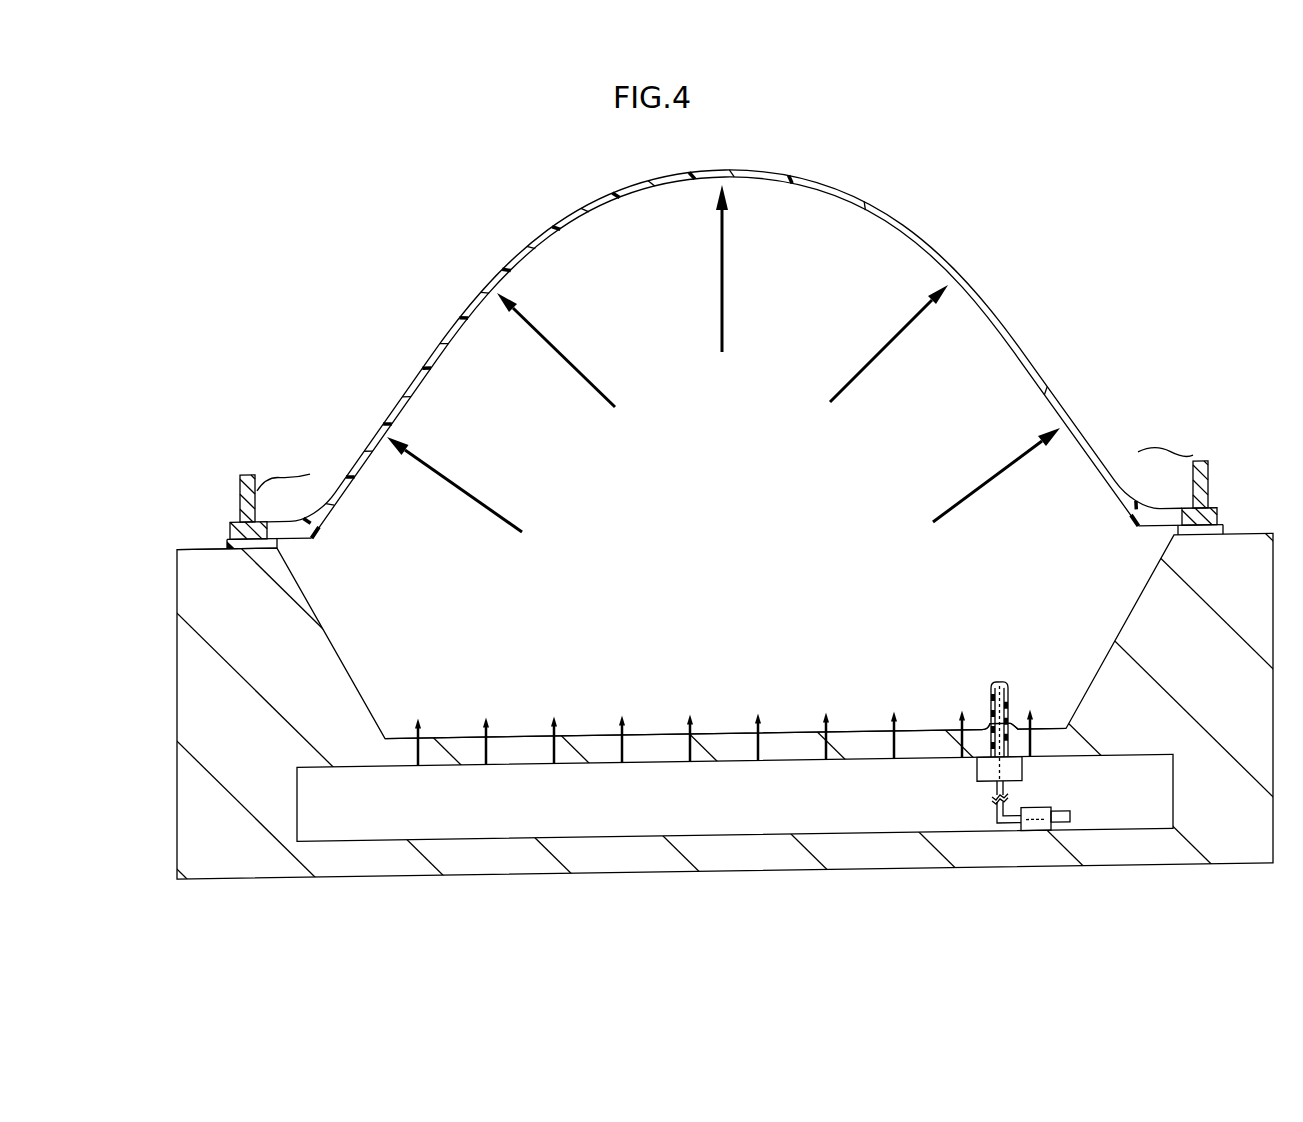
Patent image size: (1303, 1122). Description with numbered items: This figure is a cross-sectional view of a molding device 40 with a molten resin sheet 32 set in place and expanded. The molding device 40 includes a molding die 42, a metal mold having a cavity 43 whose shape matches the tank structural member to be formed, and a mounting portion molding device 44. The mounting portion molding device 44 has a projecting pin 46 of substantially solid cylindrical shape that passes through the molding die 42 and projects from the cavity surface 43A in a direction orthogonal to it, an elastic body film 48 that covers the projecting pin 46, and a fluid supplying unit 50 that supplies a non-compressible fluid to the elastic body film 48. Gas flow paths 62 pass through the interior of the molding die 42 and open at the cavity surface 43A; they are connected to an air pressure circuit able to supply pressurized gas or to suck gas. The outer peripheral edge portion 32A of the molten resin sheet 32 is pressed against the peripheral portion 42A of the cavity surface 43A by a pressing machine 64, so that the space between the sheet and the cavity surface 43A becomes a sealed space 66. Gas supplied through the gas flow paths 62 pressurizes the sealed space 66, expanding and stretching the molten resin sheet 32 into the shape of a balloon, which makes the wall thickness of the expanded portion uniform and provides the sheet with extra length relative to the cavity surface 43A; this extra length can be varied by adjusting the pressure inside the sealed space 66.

The molten resin sheet 32 is at (725, 328).
The outer peripheral edge portion 32A is at (238, 522).
The molding device 40 is at (186, 329).
The molding die 42 is at (175, 630).
The peripheral portion 42A is at (222, 545).
The cavity 43 is at (735, 797).
The cavity surface 43A is at (520, 735).
The mounting portion molding device 44 is at (1011, 724).
The projecting pin 46 is at (1014, 695).
The elastic body film 48 is at (995, 688).
The fluid supplying unit 50 is at (1057, 810).
The gas flow paths 62 is at (418, 752).
The pressing machine 64 is at (262, 482).
The sealed space 66 is at (812, 237).